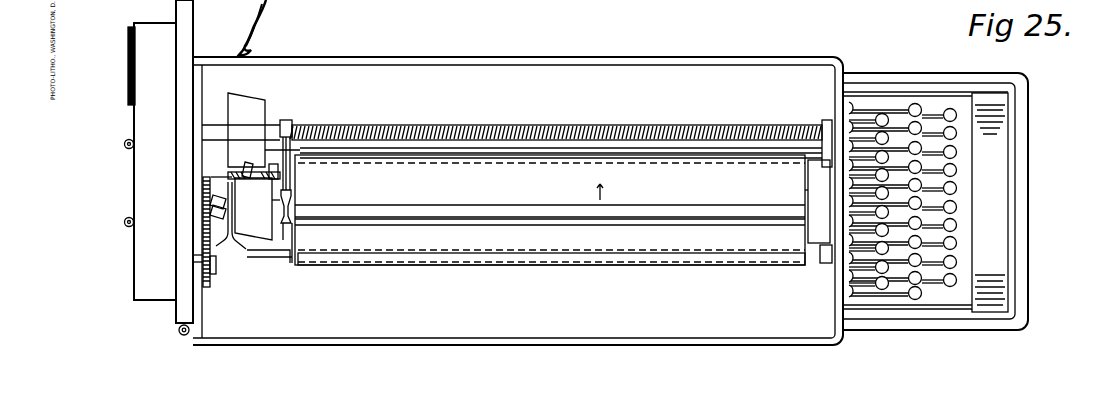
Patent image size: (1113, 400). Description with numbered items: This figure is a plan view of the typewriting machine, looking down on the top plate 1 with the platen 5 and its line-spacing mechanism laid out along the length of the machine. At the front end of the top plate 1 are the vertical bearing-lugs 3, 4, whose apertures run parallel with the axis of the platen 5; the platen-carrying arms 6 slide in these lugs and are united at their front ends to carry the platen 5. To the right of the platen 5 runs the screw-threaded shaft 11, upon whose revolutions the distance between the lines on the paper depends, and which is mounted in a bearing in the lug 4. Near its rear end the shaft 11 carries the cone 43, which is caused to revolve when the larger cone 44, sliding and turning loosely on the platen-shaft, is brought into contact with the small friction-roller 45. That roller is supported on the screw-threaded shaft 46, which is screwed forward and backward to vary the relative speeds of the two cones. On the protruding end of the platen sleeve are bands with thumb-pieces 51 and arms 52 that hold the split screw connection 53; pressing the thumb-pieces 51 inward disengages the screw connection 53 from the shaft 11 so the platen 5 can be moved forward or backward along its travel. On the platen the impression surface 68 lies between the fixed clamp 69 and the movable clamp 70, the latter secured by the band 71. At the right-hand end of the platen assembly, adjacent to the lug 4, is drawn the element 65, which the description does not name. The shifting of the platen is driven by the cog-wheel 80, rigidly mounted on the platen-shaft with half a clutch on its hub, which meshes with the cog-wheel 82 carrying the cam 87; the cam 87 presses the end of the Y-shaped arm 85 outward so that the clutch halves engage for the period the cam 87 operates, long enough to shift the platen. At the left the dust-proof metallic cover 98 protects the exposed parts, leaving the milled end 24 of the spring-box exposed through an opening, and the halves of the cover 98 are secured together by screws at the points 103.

The top plate 1 is at (585, 124).
The vertical bearing-lug 3 is at (827, 266).
The vertical bearing-lug 4 is at (826, 122).
The platen 5 is at (550, 210).
The platen-carrying arms 6 is at (335, 148).
The screw-threaded shaft 11 is at (214, 132).
The milled end of the spring-box 24 is at (136, 60).
The cone 43 is at (258, 108).
The larger cone 44 is at (257, 209).
The friction-roller 45 is at (248, 163).
The screw-threaded shaft 46 is at (228, 178).
The thumb-pieces 51 is at (292, 229).
The arms 52 is at (291, 176).
The screw connection 53 is at (292, 121).
The end block 65 is at (816, 194).
The impression surface 68 is at (550, 234).
The clamp 69 is at (408, 215).
The clamp 70 is at (388, 262).
The band 71 is at (655, 124).
The cog-wheel 80 is at (210, 178).
The cog-wheel 82 is at (210, 285).
The Y-shaped arm 85 is at (233, 240).
The cam 87 is at (216, 268).
The dust-proof metallic cover 98 is at (155, 161).
The securing points 103 is at (134, 150).